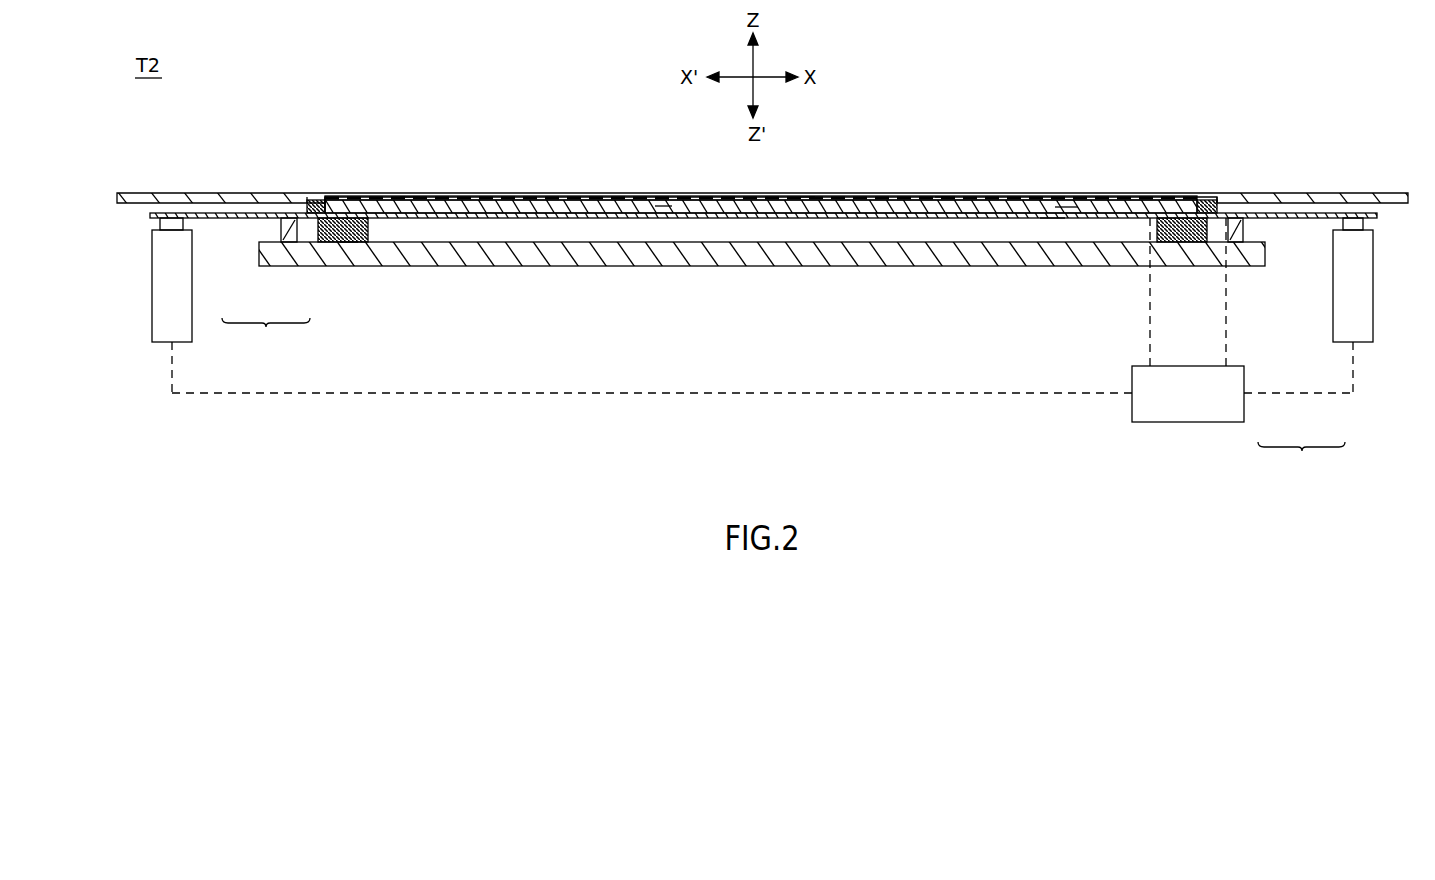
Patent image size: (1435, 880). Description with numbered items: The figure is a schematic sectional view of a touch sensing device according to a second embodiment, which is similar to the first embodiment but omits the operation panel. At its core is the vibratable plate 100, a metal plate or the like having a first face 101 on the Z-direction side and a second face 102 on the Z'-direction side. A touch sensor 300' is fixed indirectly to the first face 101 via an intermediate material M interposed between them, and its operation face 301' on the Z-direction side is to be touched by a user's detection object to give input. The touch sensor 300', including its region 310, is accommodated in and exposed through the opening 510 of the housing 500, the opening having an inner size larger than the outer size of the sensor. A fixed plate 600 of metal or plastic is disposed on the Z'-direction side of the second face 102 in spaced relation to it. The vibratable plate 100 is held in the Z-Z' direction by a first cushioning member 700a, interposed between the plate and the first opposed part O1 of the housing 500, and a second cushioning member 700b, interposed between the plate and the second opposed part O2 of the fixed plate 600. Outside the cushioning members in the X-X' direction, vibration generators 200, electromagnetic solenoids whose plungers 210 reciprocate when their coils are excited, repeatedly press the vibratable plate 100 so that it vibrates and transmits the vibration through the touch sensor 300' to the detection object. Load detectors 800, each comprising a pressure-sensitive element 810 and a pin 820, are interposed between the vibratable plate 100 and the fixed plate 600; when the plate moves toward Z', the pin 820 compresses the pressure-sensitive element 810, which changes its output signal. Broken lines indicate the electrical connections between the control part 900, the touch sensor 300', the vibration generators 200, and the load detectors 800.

The vibratable plate 100 is at (1378, 216).
The first face 101 is at (1066, 207).
The second face 102 is at (1053, 214).
The vibration generator 200 is at (153, 298).
The plunger 210 is at (170, 213).
The touch sensor 300' is at (761, 170).
The operation face 301' is at (761, 163).
The panel region 310 is at (411, 197).
The housing 500 is at (259, 200).
The opening 510 is at (326, 200).
The fixed plate 600 is at (749, 255).
The first cushioning member 700a is at (1212, 204).
The second cushioning member 700b is at (1182, 242).
The load detector 800 is at (783, 395).
The pressure-sensitive element 810 is at (280, 219).
The pin 820 is at (290, 240).
The control part 900 is at (762, 320).
The first opposed part O1 is at (314, 202).
The second opposed part O2 is at (347, 247).
The intermediate material M is at (663, 206).